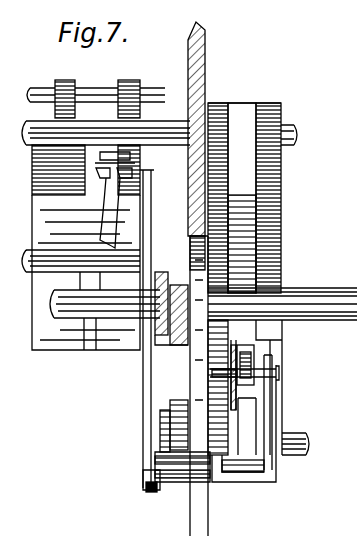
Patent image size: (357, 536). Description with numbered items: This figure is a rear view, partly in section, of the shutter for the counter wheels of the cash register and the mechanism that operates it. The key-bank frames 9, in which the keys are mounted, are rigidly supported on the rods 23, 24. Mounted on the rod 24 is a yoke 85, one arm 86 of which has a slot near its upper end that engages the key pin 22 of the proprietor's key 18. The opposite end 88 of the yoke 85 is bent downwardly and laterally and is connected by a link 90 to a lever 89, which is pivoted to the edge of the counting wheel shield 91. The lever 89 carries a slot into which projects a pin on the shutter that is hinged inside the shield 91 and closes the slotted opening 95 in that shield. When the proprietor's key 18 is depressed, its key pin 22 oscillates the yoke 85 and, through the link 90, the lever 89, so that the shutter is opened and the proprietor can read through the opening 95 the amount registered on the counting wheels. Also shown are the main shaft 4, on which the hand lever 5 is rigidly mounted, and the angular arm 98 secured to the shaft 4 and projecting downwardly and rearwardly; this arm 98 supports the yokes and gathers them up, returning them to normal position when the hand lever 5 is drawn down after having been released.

The main shaft 4 is at (300, 290).
The hand lever 5 is at (143, 350).
The key-bank frame 9 is at (246, 108).
The proprietor's key 18 is at (246, 358).
The key pin 22 is at (279, 373).
The rod 23 is at (284, 130).
The rod 24 is at (300, 434).
The yoke 85 is at (250, 476).
The arm of yoke 86 is at (258, 394).
The end of yoke 88 is at (176, 480).
The lever 89 is at (143, 157).
The link 90 is at (144, 401).
The counting wheel shield 91 is at (52, 168).
The slotted opening 95 is at (95, 150).
The angular arm 98 is at (166, 320).